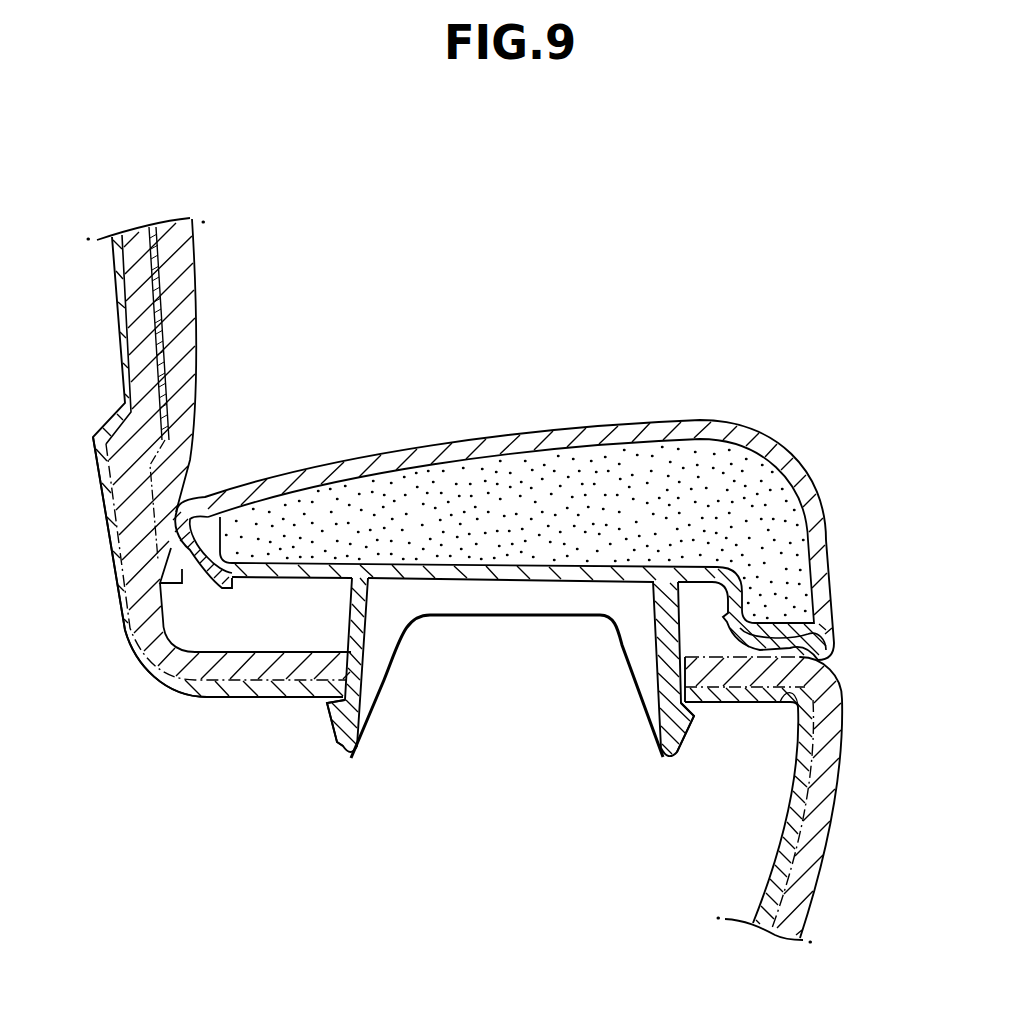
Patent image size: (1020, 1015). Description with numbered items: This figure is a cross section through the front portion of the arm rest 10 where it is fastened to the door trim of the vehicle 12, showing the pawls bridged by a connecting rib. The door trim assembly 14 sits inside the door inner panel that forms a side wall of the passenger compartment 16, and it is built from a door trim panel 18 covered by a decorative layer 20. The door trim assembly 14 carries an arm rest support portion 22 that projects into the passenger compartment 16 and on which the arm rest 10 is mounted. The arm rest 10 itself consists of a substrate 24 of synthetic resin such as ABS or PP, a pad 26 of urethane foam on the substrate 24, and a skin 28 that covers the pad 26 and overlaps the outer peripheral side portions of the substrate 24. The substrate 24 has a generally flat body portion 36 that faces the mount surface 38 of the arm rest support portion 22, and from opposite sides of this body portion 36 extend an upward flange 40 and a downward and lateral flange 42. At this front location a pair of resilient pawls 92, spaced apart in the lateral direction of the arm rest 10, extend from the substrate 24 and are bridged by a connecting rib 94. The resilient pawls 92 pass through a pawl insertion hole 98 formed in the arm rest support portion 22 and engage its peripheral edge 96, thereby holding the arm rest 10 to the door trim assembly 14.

The arm rest 10 is at (437, 385).
The vehicle 12 is at (213, 258).
The door trim assembly 14 is at (200, 358).
The passenger compartment 16 is at (563, 303).
The door trim panel 18 is at (130, 637).
The decorative layer 20 is at (813, 852).
The arm rest support portion 22 is at (843, 742).
The substrate 24 is at (563, 562).
The pad 26 is at (639, 448).
The skin 28 is at (716, 423).
The body portion 36 is at (483, 562).
The mount surface 38 is at (285, 652).
The upward flange 40 is at (224, 512).
The downward and lateral flange 42 is at (762, 626).
The resilient pawls 92 is at (338, 742).
The connecting rib 94 is at (513, 598).
The peripheral edge 96 is at (358, 672).
The pawl insertion hole 98 is at (632, 683).